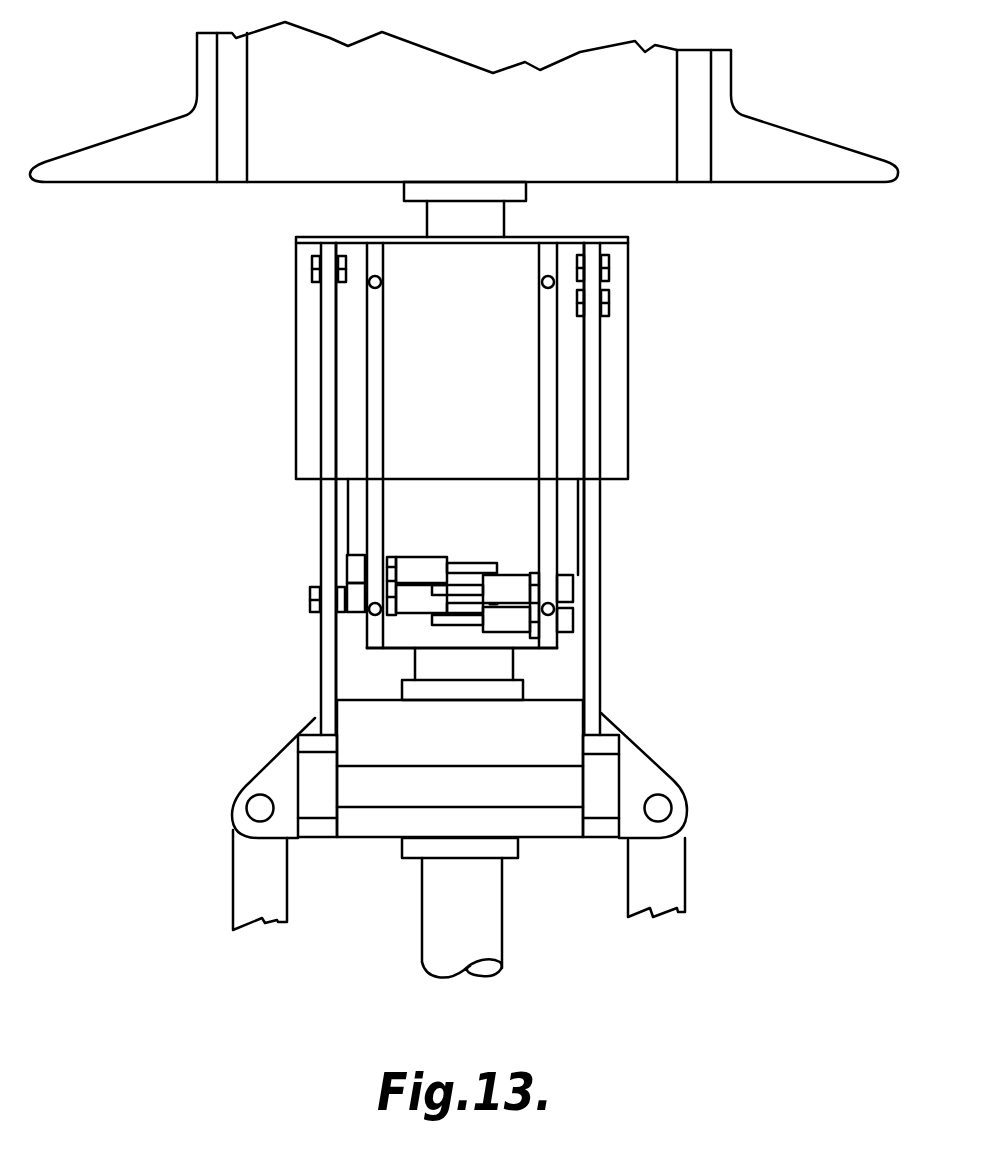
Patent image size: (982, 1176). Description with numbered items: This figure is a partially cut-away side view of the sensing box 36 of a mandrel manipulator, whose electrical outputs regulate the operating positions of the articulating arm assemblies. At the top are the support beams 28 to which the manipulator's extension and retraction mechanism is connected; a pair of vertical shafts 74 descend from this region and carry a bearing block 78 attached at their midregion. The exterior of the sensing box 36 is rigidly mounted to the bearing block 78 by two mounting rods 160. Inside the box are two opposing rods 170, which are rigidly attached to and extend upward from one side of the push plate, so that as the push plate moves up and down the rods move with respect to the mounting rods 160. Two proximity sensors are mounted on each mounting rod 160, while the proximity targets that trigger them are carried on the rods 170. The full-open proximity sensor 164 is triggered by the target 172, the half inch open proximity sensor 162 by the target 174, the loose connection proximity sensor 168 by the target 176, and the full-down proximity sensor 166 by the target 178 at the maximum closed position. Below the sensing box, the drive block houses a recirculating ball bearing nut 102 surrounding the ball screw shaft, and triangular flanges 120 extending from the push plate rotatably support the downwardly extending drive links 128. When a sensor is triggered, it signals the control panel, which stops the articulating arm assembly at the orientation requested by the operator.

The support beam 28 is at (808, 145).
The vertical shaft 74 is at (500, 219).
The sensing box 36 is at (617, 403).
The rod 170 is at (322, 693).
The mounting rod 160 is at (372, 443).
The bearing block 78 is at (568, 517).
The target 174 is at (312, 268).
The target 178 is at (609, 261).
The target 176 is at (609, 307).
The target 172 is at (312, 613).
The half inch open proximity sensor 162 is at (417, 568).
The full-open proximity sensor 164 is at (415, 608).
The full-down proximity sensor 166 is at (513, 586).
The loose connection proximity sensor 168 is at (518, 624).
The recirculating ball bearing nut 102 is at (497, 670).
The triangular flange 120 is at (268, 778).
The drive link 128 is at (243, 855).